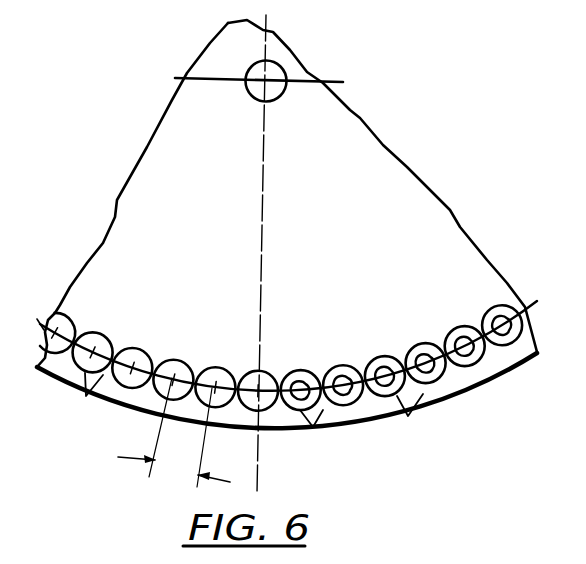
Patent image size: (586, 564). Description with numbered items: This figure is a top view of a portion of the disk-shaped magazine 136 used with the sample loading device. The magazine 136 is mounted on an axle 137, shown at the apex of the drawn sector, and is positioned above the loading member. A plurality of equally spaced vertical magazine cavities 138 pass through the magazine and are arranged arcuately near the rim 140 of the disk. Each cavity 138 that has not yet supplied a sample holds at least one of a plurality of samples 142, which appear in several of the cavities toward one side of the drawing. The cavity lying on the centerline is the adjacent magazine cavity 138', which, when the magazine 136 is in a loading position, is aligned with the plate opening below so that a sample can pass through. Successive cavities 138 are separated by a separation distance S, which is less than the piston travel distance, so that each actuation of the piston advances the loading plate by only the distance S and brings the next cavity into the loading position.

The magazine 136 is at (345, 264).
The axle 137 is at (253, 99).
The magazine cavities 138 is at (277, 385).
The adjacent magazine cavity 138' is at (276, 368).
The rim 140 is at (502, 373).
The samples 142 is at (410, 418).
The separation distance S is at (174, 432).